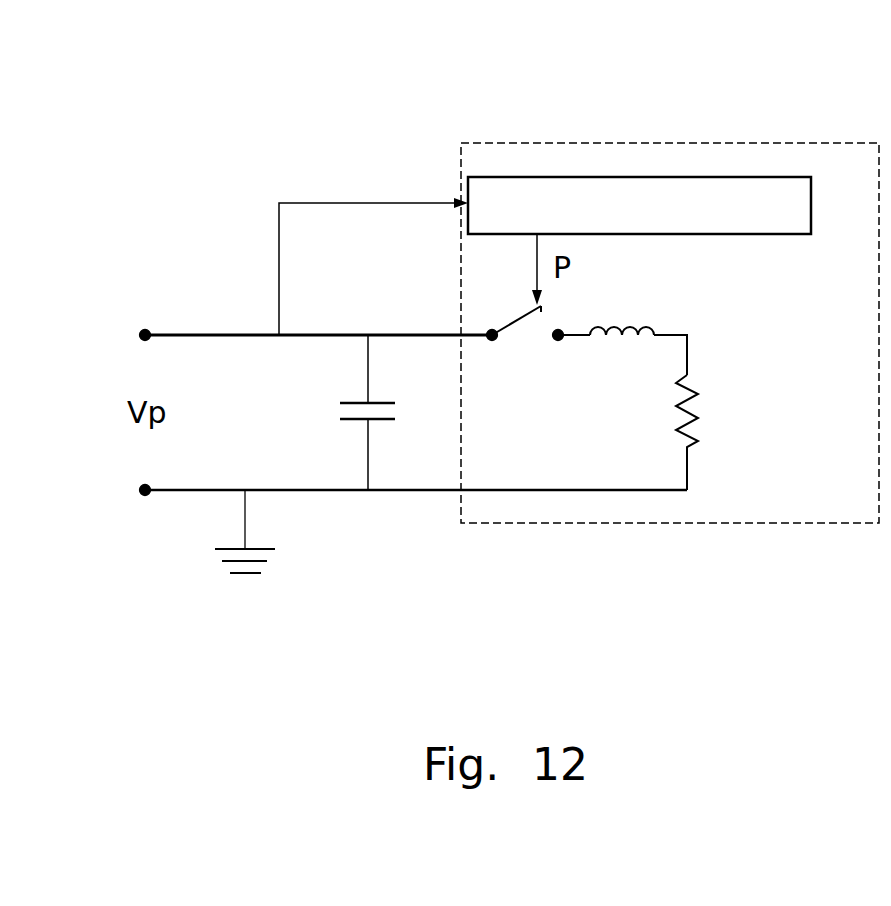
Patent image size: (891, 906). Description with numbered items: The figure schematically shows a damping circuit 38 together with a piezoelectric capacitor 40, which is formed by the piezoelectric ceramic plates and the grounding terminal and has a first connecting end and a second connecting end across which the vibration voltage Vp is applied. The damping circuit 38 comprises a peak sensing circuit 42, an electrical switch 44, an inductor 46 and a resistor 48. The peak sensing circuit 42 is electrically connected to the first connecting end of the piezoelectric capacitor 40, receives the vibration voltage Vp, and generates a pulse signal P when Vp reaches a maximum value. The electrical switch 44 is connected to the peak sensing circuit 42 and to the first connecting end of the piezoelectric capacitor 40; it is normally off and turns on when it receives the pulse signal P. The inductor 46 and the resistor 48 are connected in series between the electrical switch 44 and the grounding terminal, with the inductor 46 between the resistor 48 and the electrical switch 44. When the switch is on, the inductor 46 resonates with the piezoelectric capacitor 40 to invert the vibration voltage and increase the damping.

The damping circuit 38 is at (615, 142).
The piezoelectric capacitor 40 is at (340, 403).
The peak sensing circuit 42 is at (512, 177).
The electrical switch 44 is at (515, 323).
The inductor 46 is at (655, 332).
The resistor 48 is at (698, 440).